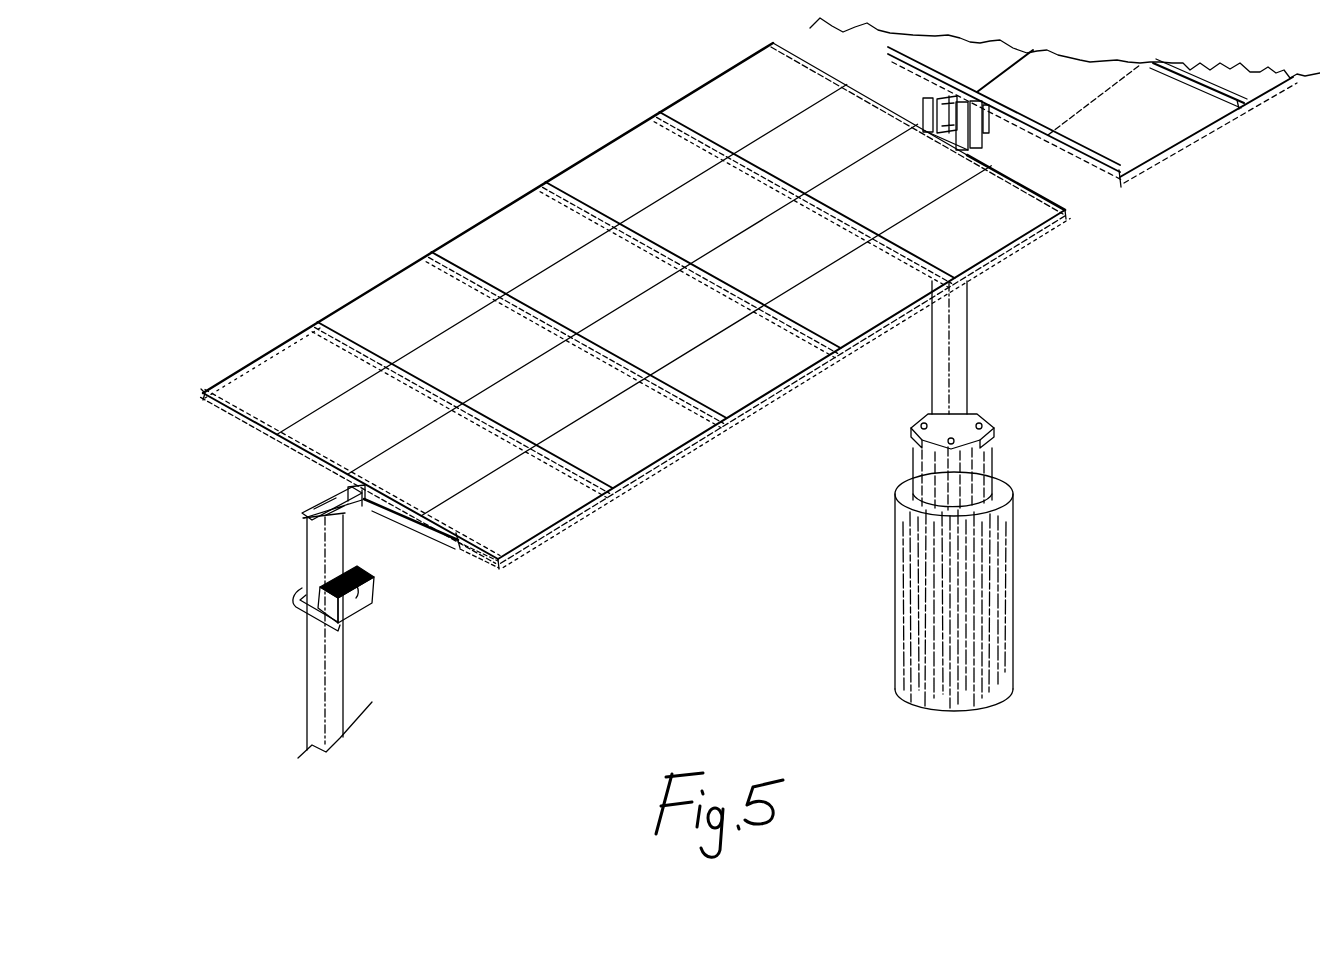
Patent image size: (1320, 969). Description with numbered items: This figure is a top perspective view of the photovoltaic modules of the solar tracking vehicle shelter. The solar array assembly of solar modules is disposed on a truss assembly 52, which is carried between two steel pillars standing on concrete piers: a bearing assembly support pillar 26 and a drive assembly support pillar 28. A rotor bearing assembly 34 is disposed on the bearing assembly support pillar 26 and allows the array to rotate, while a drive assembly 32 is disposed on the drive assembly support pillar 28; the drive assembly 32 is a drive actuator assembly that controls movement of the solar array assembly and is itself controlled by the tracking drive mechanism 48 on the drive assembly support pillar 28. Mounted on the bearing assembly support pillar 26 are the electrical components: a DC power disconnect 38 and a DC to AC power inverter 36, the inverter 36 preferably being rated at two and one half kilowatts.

The bearing assembly support pillar 26 is at (314, 679).
The drive assembly support pillar 28 is at (961, 380).
The drive assembly 32 is at (979, 137).
The rotor bearing assembly 34 is at (322, 497).
The DC to AC power inverter 36 is at (366, 601).
The DC power disconnect 38 is at (388, 511).
The tracking drive mechanism 48 is at (643, 471).
The truss assembly 52 is at (300, 568).